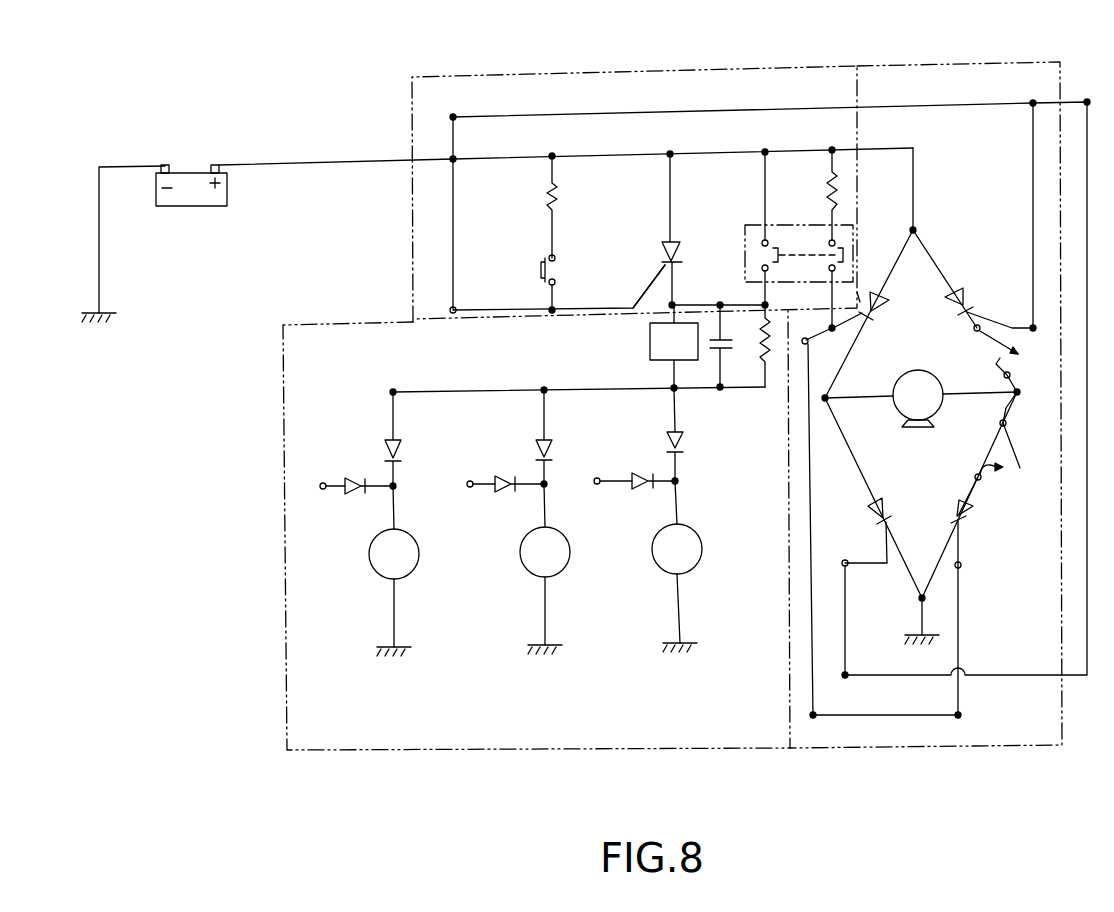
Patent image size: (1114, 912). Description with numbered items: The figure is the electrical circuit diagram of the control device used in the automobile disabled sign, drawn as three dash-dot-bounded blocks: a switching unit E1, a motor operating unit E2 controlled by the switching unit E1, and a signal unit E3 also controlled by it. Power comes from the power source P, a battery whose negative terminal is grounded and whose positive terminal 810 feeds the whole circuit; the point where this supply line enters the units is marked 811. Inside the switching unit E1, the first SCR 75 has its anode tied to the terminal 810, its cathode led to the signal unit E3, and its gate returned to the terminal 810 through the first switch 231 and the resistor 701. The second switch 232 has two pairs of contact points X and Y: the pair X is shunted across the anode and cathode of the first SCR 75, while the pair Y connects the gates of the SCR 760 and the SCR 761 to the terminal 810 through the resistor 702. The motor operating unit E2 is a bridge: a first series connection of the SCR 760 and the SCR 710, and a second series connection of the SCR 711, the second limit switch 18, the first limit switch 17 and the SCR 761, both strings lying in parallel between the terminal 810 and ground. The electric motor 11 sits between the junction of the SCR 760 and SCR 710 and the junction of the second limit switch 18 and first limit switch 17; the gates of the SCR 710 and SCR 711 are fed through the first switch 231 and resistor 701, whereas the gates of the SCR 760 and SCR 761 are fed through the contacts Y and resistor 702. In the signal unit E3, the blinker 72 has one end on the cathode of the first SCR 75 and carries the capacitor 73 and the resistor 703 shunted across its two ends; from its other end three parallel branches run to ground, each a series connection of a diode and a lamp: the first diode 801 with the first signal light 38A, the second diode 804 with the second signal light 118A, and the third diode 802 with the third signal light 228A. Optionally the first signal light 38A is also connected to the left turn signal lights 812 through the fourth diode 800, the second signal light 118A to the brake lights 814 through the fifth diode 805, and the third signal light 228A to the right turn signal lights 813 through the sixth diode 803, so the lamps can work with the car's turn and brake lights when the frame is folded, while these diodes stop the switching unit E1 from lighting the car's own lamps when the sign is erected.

The positive terminal 810 is at (221, 164).
The power source P is at (195, 207).
The switching unit E1 is at (600, 76).
The motor operating unit E2 is at (990, 65).
The signal unit E3 is at (283, 668).
The resistor 701 is at (560, 190).
The first switch 231 is at (558, 260).
The first SCR 75 is at (680, 241).
The pair of contact points X is at (763, 240).
The second switch 232 is at (800, 225).
The pair of contact points Y is at (836, 240).
The resistor 702 is at (842, 190).
The resistor 703 is at (770, 328).
The connection terminal 811 is at (453, 316).
The blinker 72 is at (650, 340).
The capacitor 73 is at (732, 348).
The SCR 760 is at (855, 288).
The SCR 711 is at (963, 290).
The electric motor 11 is at (918, 370).
The second limit switch 18 is at (1022, 354).
The first limit switch 17 is at (1022, 467).
The first diode 801 is at (400, 440).
The fourth diode 800 is at (347, 476).
The left turn signal lights 812 is at (323, 483).
The second diode 804 is at (550, 438).
The fifth diode 805 is at (500, 475).
The brake lights 814 is at (468, 480).
The third diode 802 is at (685, 438).
The sixth diode 803 is at (645, 477).
The right turn signal lights 813 is at (598, 478).
The first signal light 38A is at (420, 565).
The second signal light 118A is at (570, 560).
The third signal light 228A is at (704, 553).
The SCR 710 is at (875, 510).
The SCR 761 is at (965, 512).